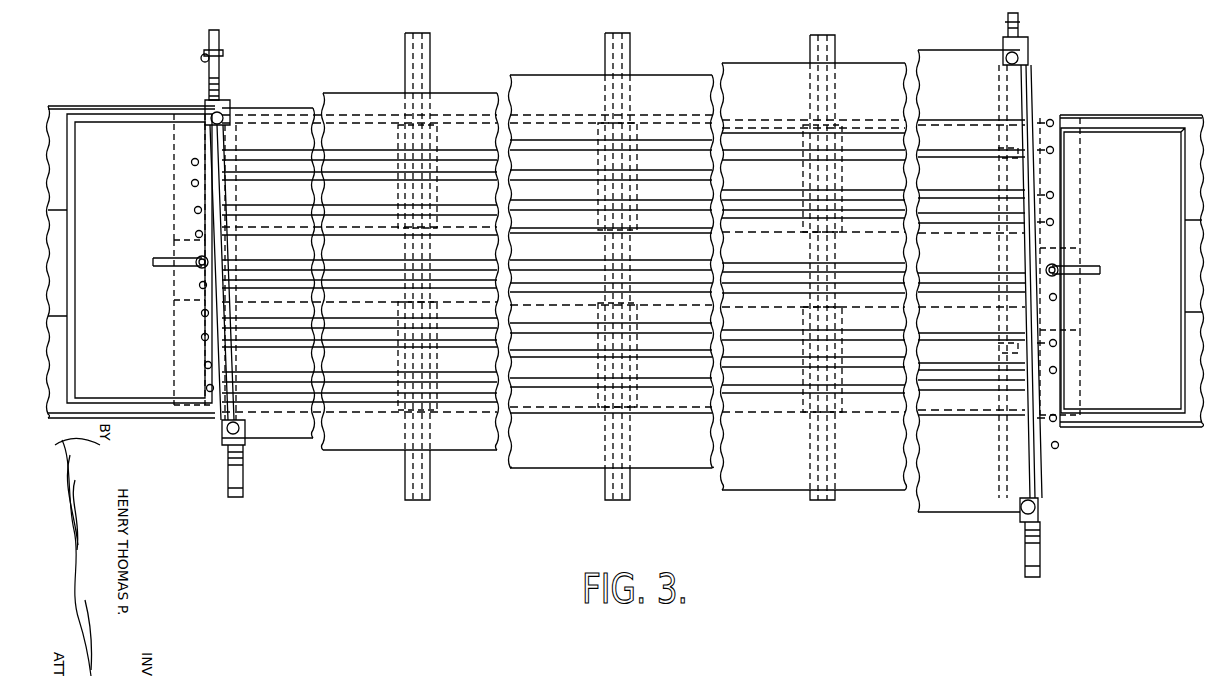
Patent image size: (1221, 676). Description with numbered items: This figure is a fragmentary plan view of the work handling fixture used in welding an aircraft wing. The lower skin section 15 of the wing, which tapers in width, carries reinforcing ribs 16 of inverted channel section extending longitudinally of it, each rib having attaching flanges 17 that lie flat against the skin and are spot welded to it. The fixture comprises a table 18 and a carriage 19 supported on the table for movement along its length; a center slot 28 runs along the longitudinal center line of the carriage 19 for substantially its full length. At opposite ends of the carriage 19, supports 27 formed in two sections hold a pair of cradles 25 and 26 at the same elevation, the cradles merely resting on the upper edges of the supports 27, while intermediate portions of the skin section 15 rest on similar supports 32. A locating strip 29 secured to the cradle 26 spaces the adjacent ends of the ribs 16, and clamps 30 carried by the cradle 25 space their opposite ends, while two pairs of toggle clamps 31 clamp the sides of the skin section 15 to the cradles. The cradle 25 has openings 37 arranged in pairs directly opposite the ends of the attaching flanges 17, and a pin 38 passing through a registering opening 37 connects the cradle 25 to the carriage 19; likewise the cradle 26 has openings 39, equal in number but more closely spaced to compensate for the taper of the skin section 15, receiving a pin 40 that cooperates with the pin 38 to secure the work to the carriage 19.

The skin section 15 is at (540, 75).
The reinforcing ribs 16 is at (264, 167).
The attaching flanges 17 is at (270, 179).
The table 18 is at (58, 105).
The carriage 19 is at (147, 128).
The cradle 25 is at (1060, 324).
The cradle 26 is at (198, 323).
The supports 27 is at (220, 34).
The center slot 28 is at (172, 230).
The locating strip 29 is at (175, 296).
The clamps 30 is at (1042, 385).
The toggle clamps 31 is at (226, 83).
The supports 32 is at (432, 60).
The openings 37 is at (1055, 123).
The pin 38 is at (1085, 266).
The openings 39 is at (191, 181).
The pin 40 is at (152, 260).